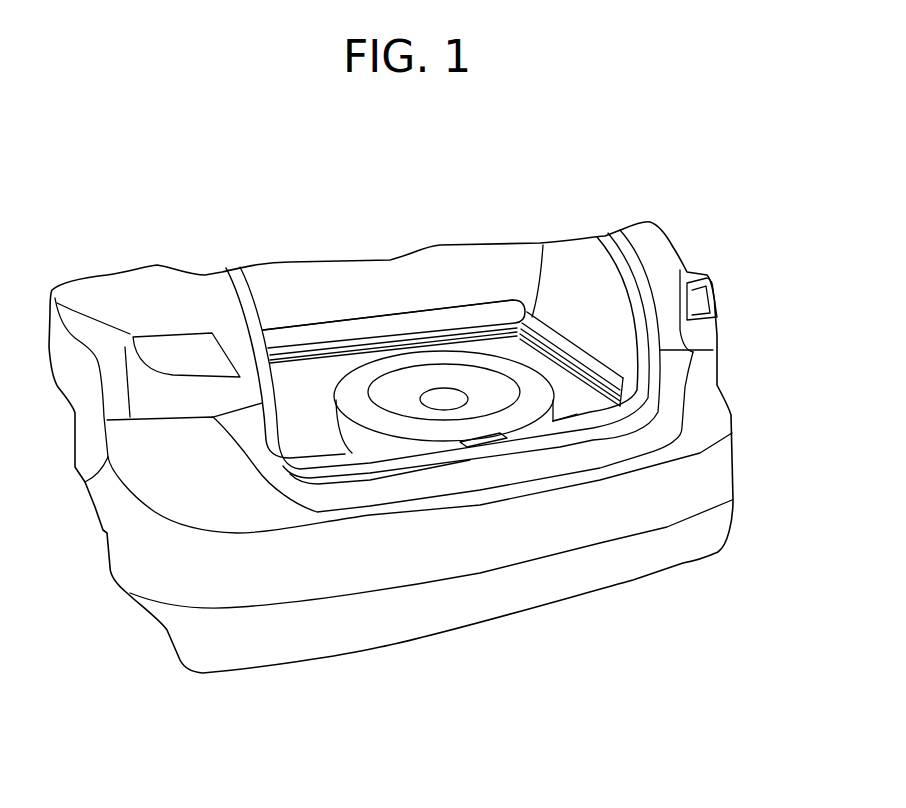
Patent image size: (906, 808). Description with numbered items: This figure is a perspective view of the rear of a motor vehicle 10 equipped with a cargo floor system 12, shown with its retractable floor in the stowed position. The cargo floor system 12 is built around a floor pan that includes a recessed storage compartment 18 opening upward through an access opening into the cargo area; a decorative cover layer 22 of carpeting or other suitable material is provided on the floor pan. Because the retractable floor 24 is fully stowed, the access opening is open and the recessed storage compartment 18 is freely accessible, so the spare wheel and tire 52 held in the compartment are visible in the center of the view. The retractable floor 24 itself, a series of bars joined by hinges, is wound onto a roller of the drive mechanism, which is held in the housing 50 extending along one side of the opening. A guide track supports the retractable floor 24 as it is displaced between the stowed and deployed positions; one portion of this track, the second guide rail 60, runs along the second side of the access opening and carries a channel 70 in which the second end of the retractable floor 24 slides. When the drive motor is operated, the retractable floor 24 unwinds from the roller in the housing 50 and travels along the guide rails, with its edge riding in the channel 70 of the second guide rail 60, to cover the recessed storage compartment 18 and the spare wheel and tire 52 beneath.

The motor vehicle 10 is at (707, 197).
The cargo floor system 12 is at (287, 313).
The recessed storage compartment 18 is at (560, 335).
The decorative cover layer 22 is at (588, 402).
The retractable floor 24 is at (487, 323).
The housing 50 is at (333, 327).
The spare wheel and tire 52 is at (415, 358).
The second guide rail 60 is at (567, 358).
The channel 70 is at (558, 265).